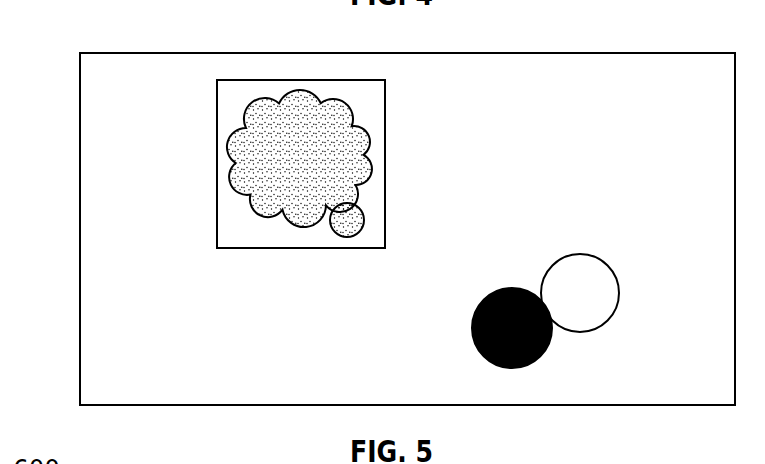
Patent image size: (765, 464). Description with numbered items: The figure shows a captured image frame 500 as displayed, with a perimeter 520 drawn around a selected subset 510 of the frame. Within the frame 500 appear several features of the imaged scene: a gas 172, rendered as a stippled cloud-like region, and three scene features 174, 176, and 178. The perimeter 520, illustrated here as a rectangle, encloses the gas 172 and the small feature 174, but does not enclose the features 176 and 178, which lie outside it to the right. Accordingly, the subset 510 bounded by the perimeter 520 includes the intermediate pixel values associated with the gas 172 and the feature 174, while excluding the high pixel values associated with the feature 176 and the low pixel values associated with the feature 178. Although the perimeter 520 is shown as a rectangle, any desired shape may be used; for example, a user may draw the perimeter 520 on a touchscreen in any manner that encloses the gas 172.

The image 500 is at (104, 33).
The selected subset 510 is at (373, 111).
The perimeter 520 is at (386, 158).
The gas 172 is at (240, 126).
The scene feature 174 is at (352, 239).
The scene feature 176 is at (572, 255).
The scene feature 178 is at (505, 289).